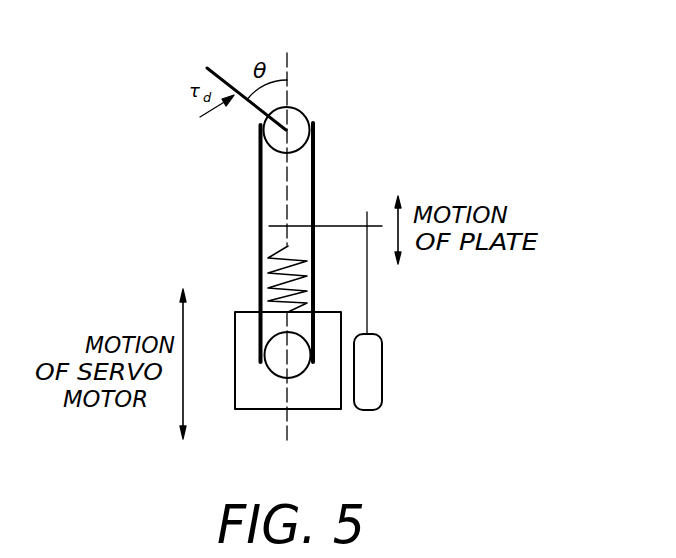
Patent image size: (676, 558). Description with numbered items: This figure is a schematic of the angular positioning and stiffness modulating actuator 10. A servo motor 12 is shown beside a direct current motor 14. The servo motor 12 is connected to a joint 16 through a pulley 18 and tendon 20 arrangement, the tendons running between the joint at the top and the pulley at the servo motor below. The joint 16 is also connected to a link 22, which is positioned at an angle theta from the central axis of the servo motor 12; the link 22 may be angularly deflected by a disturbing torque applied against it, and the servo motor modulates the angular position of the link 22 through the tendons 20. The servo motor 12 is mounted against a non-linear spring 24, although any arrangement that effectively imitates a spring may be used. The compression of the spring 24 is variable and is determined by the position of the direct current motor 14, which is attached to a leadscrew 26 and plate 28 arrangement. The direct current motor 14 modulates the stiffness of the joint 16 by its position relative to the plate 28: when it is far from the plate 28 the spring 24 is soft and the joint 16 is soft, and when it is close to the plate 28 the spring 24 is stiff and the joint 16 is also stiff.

The angular positioning and stiffness modulating actuator 10 is at (410, 160).
The servo motor 12 is at (260, 403).
The direct current (DC) motor 14 is at (372, 397).
The joint 16 is at (294, 107).
The pulley 18 is at (298, 377).
The tendon 20 is at (259, 157).
The link 22 is at (221, 71).
The non-linear spring 24 is at (281, 250).
The leadscrew 26 is at (367, 277).
The plate 28 is at (277, 226).